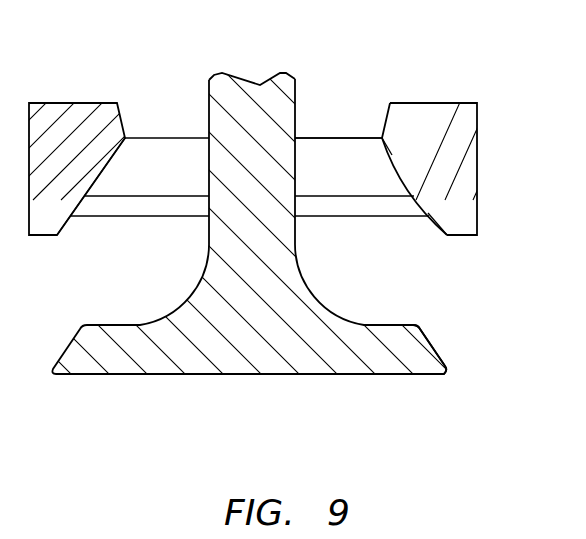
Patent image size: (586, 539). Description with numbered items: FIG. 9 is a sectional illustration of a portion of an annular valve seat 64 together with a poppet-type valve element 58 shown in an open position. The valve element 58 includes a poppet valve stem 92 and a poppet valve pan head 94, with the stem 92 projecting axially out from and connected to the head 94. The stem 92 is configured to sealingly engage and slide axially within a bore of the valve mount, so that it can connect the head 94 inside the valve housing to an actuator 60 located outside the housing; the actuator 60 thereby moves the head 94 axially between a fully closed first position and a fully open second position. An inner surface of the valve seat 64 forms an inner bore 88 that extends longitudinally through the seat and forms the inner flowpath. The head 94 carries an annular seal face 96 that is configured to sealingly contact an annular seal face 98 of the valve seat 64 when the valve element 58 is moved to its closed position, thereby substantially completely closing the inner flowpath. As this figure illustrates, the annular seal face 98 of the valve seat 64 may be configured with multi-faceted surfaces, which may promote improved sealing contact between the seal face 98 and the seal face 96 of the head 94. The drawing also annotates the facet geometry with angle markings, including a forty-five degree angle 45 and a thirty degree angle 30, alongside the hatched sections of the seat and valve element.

The valve element 58 is at (332, 393).
The annular valve seat 64 is at (477, 117).
The inner bore 88 is at (352, 105).
The poppet valve stem 92 is at (263, 100).
The poppet valve pan head 94 is at (115, 363).
The annular seal face 96 is at (433, 342).
The annular seal face 98 is at (448, 223).
The 45 degree angle 45 is at (97, 203).
The actuator 60 is at (402, 173).
The 30 degree angle 30 is at (417, 228).